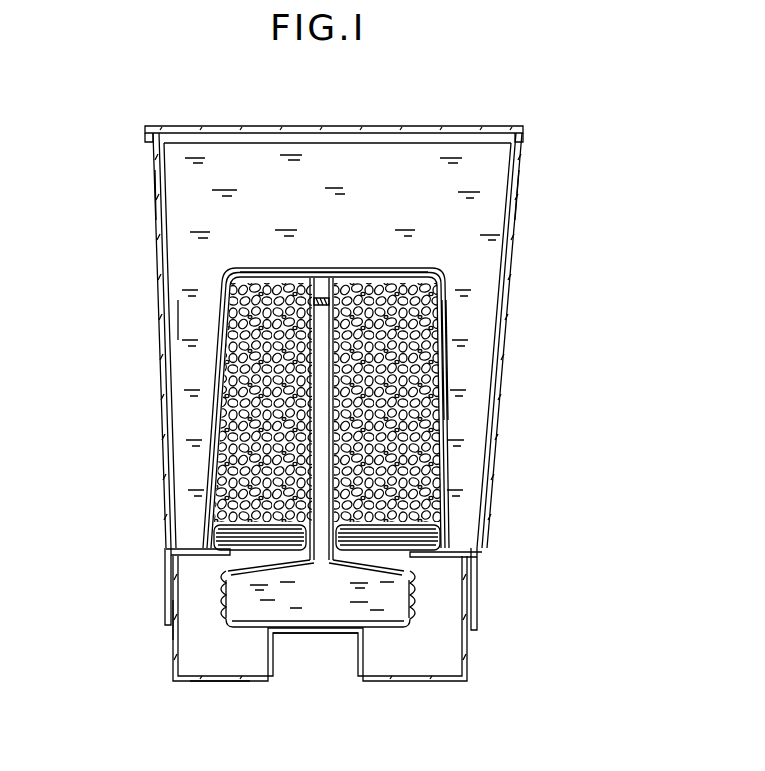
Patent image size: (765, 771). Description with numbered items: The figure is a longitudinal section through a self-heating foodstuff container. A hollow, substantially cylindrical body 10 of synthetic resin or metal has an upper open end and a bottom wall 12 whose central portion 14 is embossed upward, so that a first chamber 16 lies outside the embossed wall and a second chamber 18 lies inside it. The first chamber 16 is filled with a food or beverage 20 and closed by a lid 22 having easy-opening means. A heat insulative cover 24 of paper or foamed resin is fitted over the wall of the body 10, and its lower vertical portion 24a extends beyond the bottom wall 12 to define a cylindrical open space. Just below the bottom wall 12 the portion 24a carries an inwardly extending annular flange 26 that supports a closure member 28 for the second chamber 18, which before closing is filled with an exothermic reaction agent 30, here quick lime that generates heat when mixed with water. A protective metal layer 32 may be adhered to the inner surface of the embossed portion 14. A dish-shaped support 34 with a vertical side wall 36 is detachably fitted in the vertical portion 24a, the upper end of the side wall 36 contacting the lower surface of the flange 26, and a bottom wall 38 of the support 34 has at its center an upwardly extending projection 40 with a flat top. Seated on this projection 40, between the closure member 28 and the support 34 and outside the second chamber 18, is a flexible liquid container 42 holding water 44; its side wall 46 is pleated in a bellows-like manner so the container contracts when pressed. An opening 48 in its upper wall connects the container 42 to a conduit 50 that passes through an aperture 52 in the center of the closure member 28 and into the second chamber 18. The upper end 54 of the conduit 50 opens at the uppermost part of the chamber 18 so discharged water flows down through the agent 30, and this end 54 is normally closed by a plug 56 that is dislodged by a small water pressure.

The body 10 is at (512, 170).
The bottom wall 12 is at (455, 545).
The central portion 14 is at (373, 270).
The first chamber 16 is at (205, 318).
The second chamber 18 is at (256, 409).
The food or beverage 20 is at (247, 181).
The lid 22 is at (335, 126).
The heat insulative cover 24 is at (505, 227).
The lower vertical portion 24a is at (478, 613).
The annular flange 26 is at (208, 565).
The closure member 28 is at (413, 543).
The exothermic reaction agent 30 is at (432, 370).
The protective metal layer 32 is at (435, 330).
The dish-shaped support 34 is at (472, 660).
The vertical side wall 36 is at (172, 650).
The bottom wall 38 is at (210, 682).
The projection 40 is at (310, 634).
The liquid container 42 is at (387, 630).
The water 44 is at (272, 603).
The side wall 46 is at (412, 598).
The opening 48 is at (318, 562).
The conduit 50 is at (400, 418).
The aperture 52 is at (300, 525).
The upper end 54 is at (318, 285).
The plug 56 is at (258, 300).